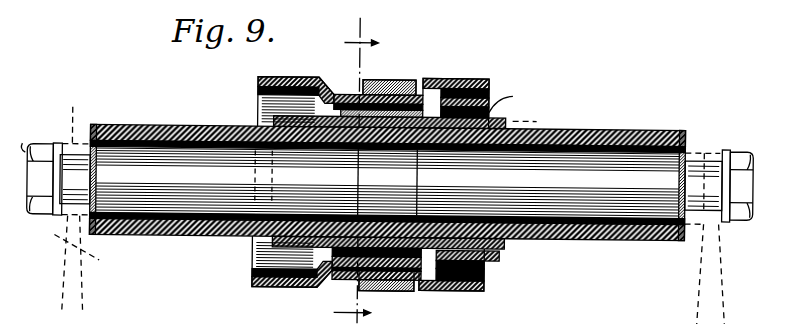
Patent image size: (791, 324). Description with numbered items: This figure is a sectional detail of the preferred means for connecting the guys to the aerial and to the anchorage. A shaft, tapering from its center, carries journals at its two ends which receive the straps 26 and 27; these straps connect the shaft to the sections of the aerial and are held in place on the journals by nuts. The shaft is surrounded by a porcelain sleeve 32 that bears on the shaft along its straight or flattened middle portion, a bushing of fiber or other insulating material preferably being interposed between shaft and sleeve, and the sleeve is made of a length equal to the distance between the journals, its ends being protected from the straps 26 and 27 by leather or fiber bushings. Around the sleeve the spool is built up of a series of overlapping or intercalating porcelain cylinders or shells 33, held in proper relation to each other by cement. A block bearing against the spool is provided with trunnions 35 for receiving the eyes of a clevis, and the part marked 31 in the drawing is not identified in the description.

The strap 26 is at (63, 146).
The strap 27 is at (55, 238).
The clamp bolt 31 is at (395, 292).
The porcelain sleeve 32 is at (593, 126).
The porcelain cylinders or shells 33 is at (281, 78).
The trunnions 35 is at (391, 182).